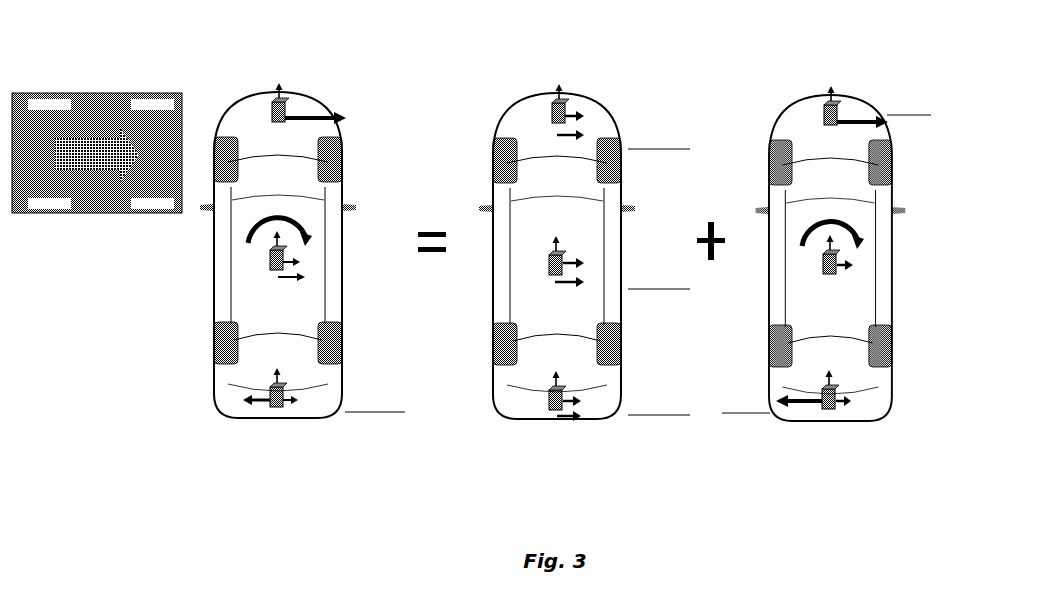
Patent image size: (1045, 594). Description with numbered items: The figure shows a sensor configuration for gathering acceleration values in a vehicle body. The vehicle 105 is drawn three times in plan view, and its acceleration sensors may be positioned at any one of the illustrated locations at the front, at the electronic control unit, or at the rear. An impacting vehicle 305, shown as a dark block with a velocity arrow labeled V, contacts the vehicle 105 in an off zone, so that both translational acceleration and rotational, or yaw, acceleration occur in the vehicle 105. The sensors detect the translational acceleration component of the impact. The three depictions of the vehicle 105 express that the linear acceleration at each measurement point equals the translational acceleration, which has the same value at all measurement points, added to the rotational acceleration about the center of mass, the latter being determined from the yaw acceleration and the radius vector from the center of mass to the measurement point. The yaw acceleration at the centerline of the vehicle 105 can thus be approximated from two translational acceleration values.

The vehicle 105 is at (300, 91).
The impacting vehicle 305 is at (101, 116).
The vehicle velocity vector V is at (97, 155).